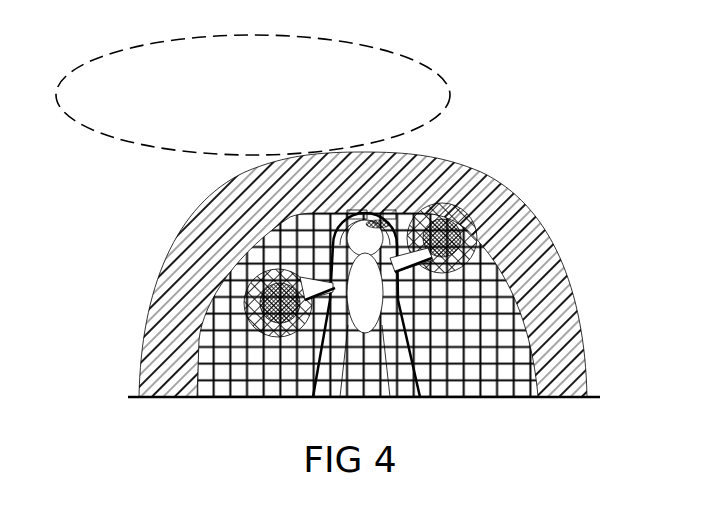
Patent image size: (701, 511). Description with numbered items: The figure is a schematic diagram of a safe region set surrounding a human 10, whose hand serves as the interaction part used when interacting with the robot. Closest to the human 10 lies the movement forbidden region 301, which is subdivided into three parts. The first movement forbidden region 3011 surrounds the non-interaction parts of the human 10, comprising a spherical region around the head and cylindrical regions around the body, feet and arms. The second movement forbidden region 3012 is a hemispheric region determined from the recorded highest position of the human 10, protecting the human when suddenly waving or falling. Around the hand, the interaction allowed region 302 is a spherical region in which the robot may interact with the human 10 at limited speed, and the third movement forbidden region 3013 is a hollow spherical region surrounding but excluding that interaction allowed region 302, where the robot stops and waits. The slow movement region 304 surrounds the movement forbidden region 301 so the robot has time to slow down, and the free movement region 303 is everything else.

The movement forbidden region 301 is at (400, 53).
The interaction allowed region 302 is at (262, 268).
The free movement region 303 is at (483, 164).
The slow movement region 304 is at (178, 287).
The first movement forbidden region 3011 is at (342, 232).
The second movement forbidden region 3012 is at (290, 245).
The third movement forbidden region 3013 is at (275, 283).
The human 10 is at (395, 218).